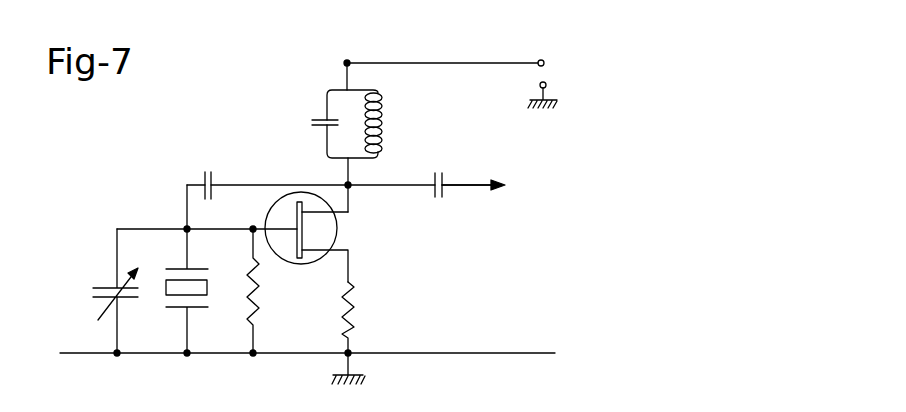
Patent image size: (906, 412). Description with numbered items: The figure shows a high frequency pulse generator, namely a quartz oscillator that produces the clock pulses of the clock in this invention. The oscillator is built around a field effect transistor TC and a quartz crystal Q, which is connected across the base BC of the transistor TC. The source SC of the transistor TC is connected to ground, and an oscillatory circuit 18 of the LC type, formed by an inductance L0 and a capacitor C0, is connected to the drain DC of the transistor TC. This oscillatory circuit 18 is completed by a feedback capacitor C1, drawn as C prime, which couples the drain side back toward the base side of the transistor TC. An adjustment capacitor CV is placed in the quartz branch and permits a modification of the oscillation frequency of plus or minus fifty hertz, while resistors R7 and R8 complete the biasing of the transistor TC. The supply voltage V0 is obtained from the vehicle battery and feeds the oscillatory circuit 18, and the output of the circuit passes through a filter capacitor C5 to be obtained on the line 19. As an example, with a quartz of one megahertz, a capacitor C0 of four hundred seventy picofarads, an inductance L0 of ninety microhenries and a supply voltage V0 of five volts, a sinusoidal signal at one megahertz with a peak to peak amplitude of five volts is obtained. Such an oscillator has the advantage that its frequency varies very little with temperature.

The oscillatory circuit 18 is at (350, 131).
The output line 19 is at (469, 184).
The capacitor C0 is at (323, 129).
The inductance L0 is at (382, 110).
The filter capacitor C5 is at (433, 182).
The feedback capacitor C1 is at (203, 184).
The adjustment capacitor CV is at (115, 285).
The quartz crystal Q is at (197, 269).
The resistor R7 is at (267, 291).
The resistor R8 is at (365, 317).
The field effect transistor TC is at (249, 239).
The base BC is at (207, 213).
The drain DC is at (340, 212).
The source SC is at (342, 268).
The supply voltage V0 is at (461, 74).